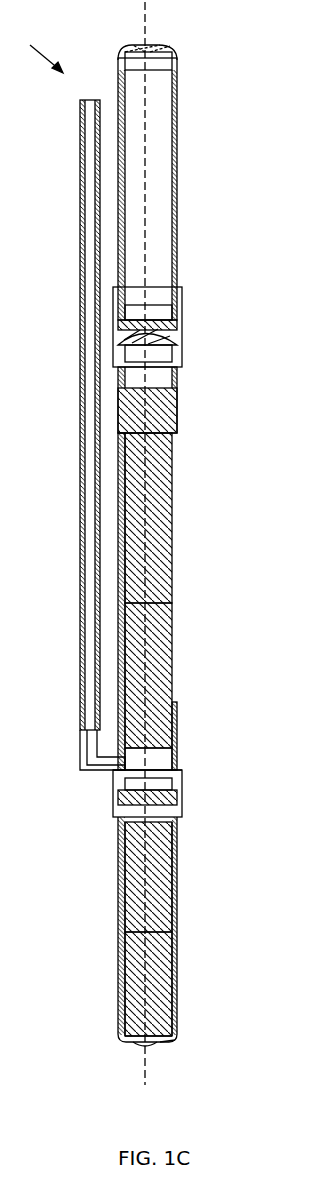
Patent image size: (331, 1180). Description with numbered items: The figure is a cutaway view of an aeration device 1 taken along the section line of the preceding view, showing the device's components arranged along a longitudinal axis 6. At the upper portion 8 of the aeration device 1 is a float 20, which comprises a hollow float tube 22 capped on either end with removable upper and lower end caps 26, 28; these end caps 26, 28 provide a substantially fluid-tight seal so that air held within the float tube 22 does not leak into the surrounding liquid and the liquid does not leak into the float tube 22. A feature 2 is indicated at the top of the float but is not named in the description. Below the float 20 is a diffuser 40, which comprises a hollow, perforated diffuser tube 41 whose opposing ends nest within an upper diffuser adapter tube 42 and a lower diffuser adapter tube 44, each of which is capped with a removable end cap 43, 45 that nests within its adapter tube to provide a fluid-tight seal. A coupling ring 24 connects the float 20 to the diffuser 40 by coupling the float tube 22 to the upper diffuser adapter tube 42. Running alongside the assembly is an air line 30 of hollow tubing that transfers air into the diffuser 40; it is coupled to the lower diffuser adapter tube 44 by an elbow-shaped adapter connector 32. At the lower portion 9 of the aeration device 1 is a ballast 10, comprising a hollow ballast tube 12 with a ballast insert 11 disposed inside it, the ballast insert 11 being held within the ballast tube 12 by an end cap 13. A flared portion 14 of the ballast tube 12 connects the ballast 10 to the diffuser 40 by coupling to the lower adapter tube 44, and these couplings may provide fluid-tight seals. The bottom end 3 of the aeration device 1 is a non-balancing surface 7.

The aeration device 1 is at (37, 51).
The cap dome 2 is at (150, 50).
The bottom end 3 is at (135, 1045).
The longitudinal axis 6 is at (140, 1076).
The non-balancing surface 7 is at (145, 1048).
The upper portion 8 is at (177, 166).
The lower portion 9 is at (173, 990).
The ballast 10 is at (140, 895).
The ballast insert 11 is at (140, 1012).
The ballast tube 12 is at (144, 948).
The end cap 13 is at (165, 1045).
The flared portion 14 is at (171, 796).
The float 20 is at (174, 160).
The float tube 22 is at (174, 238).
The coupling ring 24 is at (174, 326).
The upper end cap 26 is at (168, 52).
The lower end cap 28 is at (163, 326).
The air line 30 is at (80, 560).
The adapter connector 32 is at (85, 766).
The diffuser 40 is at (162, 567).
The diffuser tube 41 is at (160, 650).
The upper diffuser adapter tube 42 is at (176, 413).
The end cap 43 is at (155, 340).
The lower diffuser adapter tube 44 is at (176, 745).
The end cap 45 is at (158, 798).